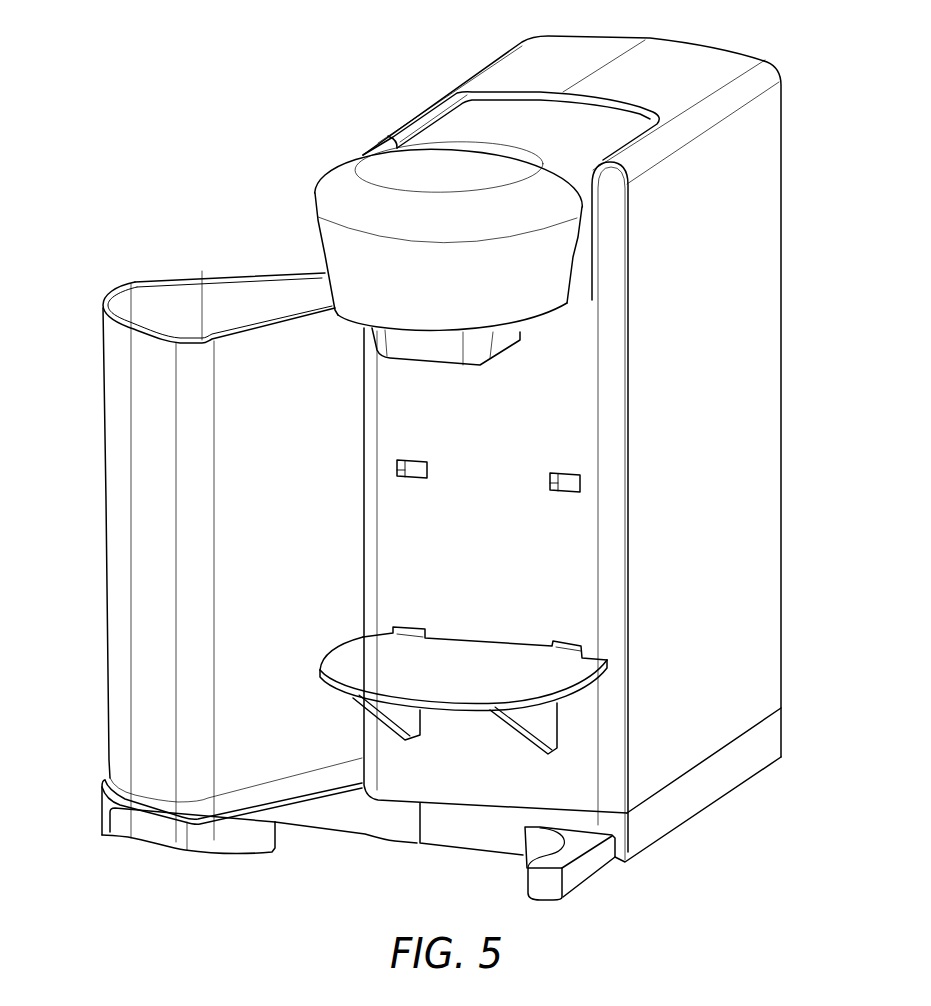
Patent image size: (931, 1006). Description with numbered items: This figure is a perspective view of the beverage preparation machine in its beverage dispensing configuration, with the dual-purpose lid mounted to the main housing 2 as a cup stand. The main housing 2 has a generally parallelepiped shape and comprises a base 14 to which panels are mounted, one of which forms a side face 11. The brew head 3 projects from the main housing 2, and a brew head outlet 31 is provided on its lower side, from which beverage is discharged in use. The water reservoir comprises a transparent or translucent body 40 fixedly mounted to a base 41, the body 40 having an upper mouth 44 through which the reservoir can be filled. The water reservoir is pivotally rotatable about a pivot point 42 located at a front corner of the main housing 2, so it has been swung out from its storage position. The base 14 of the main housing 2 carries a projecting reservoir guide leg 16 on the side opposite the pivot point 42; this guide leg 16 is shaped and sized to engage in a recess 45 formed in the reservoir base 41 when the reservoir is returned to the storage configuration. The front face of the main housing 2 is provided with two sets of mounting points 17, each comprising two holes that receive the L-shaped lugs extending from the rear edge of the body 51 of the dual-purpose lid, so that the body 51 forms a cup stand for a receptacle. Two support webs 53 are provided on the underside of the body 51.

The main housing 2 is at (446, 478).
The brew head 3 is at (313, 168).
The side face 11 is at (765, 265).
The base 14 is at (725, 782).
The reservoir guide leg 16 is at (582, 873).
The mounting points 17 is at (550, 480).
The brew head outlet 31 is at (427, 353).
The body 40 is at (106, 452).
The base 41 is at (310, 837).
The pivot point 42 is at (397, 849).
The upper mouth 44 is at (168, 290).
The recess 45 is at (159, 849).
The body 51 is at (470, 660).
The support webs 53 is at (523, 723).